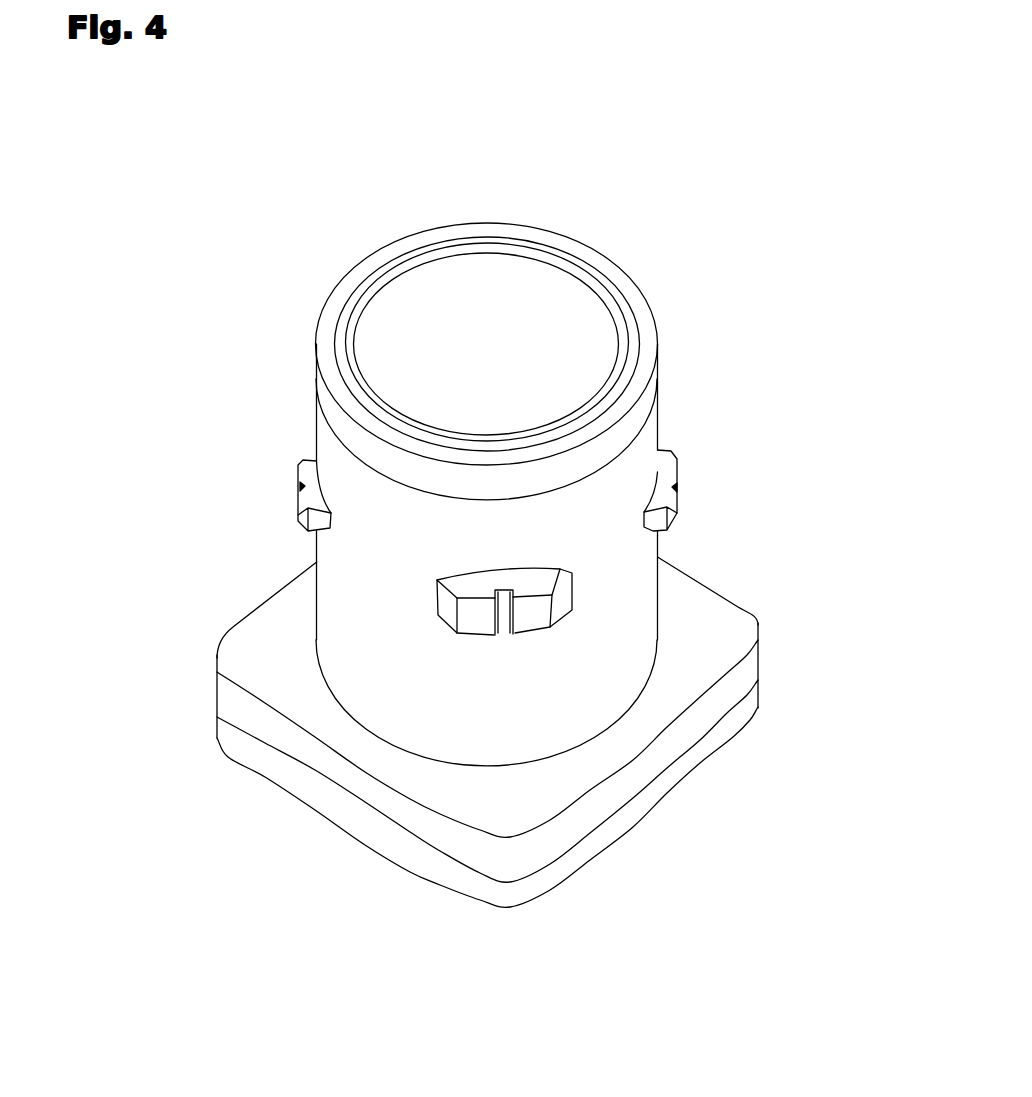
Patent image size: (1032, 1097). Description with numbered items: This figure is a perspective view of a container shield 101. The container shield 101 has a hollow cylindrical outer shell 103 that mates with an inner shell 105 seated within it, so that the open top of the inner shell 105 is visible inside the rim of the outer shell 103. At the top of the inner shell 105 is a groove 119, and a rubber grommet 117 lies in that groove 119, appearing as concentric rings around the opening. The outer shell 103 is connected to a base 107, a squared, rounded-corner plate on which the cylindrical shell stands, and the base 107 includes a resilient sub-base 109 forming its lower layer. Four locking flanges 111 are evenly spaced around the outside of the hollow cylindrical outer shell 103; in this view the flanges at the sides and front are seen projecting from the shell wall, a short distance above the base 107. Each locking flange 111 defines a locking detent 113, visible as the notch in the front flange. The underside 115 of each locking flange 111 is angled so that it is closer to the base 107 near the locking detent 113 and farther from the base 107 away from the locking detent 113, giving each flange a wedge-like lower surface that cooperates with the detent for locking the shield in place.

The container shield 101 is at (713, 363).
The hollow cylindrical outer shell 103 is at (658, 407).
The inner shell 105 is at (393, 313).
The base 107 is at (712, 637).
The resilient sub-base 109 is at (700, 755).
The locking flange 111 is at (467, 610).
The locking detent 113 is at (502, 650).
The underside 115 is at (568, 618).
The rubber grommet 117 is at (627, 322).
The groove 119 is at (602, 275).